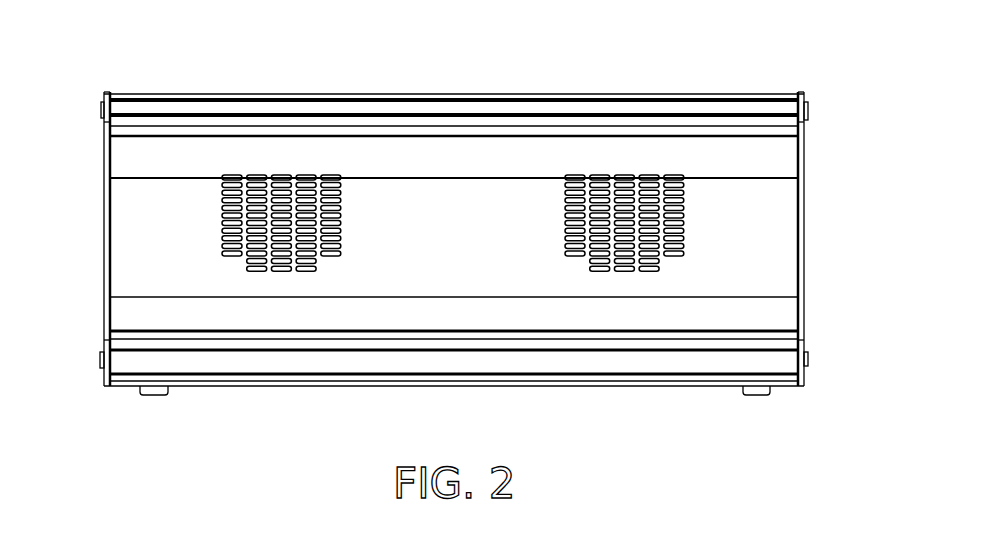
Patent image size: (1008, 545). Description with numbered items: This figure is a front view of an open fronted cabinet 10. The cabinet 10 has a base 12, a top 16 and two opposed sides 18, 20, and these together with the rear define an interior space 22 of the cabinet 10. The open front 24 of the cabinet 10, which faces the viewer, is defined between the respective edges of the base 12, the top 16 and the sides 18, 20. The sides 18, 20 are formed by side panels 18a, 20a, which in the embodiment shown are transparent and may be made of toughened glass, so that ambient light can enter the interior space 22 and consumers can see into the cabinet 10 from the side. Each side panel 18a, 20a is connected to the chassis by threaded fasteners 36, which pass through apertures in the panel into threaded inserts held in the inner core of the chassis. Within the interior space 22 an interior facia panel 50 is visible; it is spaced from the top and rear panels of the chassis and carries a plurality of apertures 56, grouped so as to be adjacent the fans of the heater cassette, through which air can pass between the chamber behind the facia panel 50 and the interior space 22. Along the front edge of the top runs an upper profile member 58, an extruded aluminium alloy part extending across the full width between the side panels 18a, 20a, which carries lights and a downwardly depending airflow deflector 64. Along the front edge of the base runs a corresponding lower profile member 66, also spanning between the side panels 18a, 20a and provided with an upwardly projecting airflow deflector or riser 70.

The cabinet 10 is at (290, 70).
The base 12 is at (556, 392).
The top 16 is at (590, 88).
The side 18 is at (818, 273).
The side panel 18a is at (806, 229).
The side 20 is at (92, 278).
The side panel 20a is at (108, 218).
The interior space 22 is at (727, 221).
The open front 24 is at (692, 220).
The threaded fasteners 36 is at (101, 111).
The interior facia panel 50 is at (459, 247).
The apertures 56 is at (213, 220).
The upper profile member 58 is at (385, 98).
The airflow deflector 64 is at (459, 166).
The lower profile member 66 is at (435, 367).
The airflow deflector or riser 70 is at (459, 325).